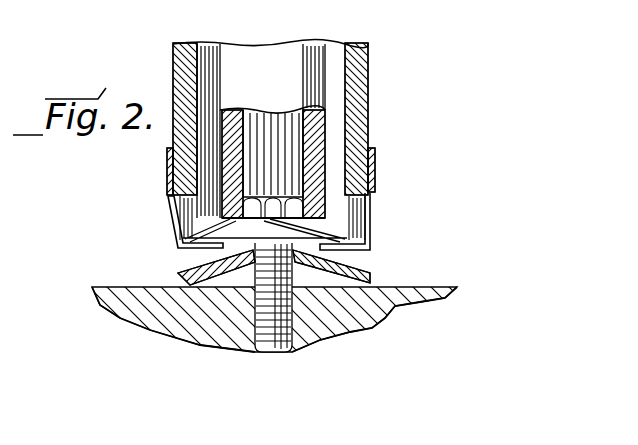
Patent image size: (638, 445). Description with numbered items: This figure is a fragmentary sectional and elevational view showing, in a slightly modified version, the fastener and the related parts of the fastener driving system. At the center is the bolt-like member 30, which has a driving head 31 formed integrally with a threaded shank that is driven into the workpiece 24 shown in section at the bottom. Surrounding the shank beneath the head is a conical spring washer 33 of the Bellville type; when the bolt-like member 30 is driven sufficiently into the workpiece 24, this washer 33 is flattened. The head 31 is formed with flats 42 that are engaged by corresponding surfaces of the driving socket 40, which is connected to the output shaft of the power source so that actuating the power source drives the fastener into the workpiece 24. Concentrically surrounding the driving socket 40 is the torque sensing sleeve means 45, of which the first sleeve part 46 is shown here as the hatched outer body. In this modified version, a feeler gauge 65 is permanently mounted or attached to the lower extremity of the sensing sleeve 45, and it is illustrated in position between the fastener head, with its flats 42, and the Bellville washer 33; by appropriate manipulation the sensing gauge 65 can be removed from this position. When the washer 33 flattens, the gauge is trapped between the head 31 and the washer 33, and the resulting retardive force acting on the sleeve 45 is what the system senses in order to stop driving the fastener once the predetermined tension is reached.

The workpiece 24 is at (372, 312).
The bolt-like member 30 is at (262, 318).
The driving head 31 is at (297, 200).
The conical spring washer 33 is at (370, 273).
The driving socket 40 is at (307, 83).
The flats 42 is at (250, 208).
The torque sensing sleeve means 45 is at (172, 63).
The first sleeve part 46 is at (183, 92).
The feeler gauge 65 is at (173, 213).